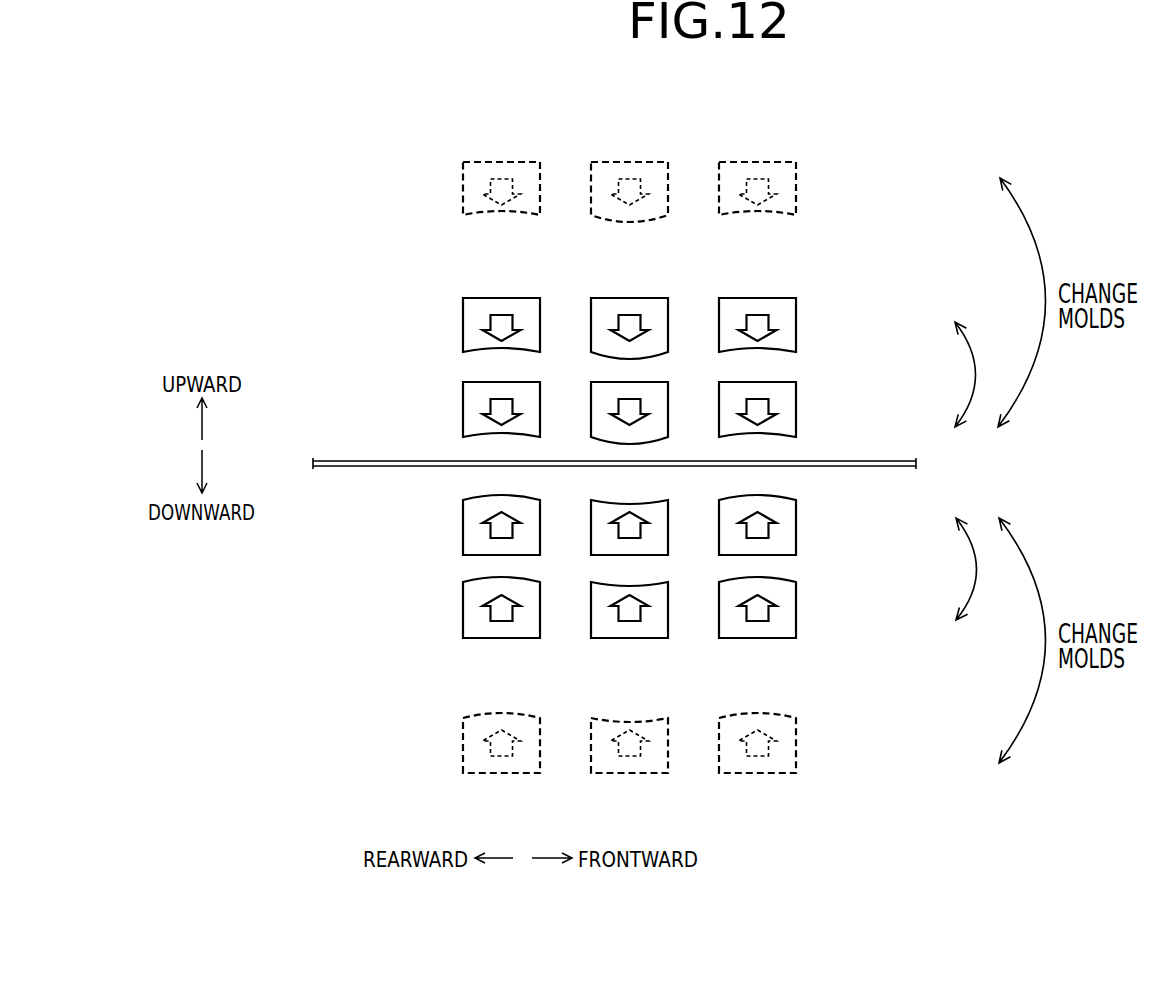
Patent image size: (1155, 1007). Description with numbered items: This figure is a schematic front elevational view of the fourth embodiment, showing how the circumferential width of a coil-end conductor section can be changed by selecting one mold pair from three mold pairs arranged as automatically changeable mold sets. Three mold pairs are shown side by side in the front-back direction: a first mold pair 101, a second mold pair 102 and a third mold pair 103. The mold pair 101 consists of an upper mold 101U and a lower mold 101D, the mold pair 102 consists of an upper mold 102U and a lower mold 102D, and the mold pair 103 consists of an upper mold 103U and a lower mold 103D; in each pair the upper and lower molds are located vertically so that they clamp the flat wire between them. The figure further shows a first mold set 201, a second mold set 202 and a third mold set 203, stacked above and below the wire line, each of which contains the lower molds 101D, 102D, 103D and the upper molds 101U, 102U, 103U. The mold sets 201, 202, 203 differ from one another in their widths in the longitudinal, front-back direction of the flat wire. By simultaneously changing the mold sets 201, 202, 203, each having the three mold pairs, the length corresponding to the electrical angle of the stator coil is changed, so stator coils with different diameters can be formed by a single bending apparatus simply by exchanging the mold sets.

The mold pair 101 is at (507, 115).
The mold pair 102 is at (636, 115).
The mold pair 103 is at (762, 115).
The upper mold 101U is at (527, 160).
The upper mold 102U is at (654, 160).
The upper mold 103U is at (782, 160).
The lower mold 101D is at (470, 535).
The lower mold 102D is at (647, 508).
The lower mold 103D is at (790, 527).
The first mold set 201 is at (434, 418).
The second mold set 202 is at (434, 333).
The third mold set 203 is at (434, 198).